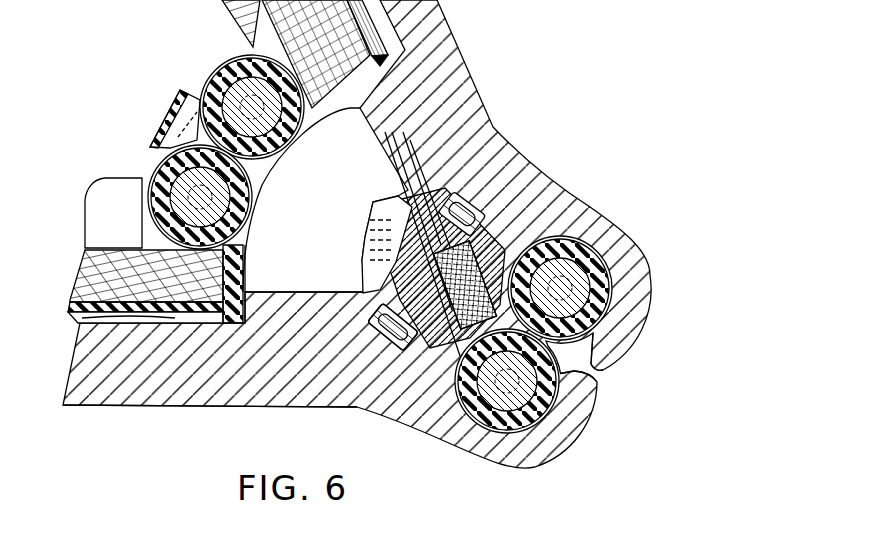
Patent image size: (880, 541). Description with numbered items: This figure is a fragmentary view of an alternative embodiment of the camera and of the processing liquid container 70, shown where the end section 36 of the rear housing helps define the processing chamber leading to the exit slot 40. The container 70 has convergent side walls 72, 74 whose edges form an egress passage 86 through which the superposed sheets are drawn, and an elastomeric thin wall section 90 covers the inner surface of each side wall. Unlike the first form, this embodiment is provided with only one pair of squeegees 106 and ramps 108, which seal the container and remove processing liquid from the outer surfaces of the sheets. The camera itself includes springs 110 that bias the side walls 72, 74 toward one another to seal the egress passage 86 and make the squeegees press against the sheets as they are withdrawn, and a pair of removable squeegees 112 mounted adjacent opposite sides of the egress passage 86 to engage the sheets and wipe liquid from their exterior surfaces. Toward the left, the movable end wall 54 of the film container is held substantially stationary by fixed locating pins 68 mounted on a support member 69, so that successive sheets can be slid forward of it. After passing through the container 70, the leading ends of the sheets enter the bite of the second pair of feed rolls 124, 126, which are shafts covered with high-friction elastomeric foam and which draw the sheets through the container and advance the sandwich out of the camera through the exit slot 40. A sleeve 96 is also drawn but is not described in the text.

The end section 36 is at (232, 388).
The exit slot 40 is at (592, 370).
The movable end wall 54 is at (247, 300).
The locating pins 68 is at (233, 249).
The support member 69 is at (257, 173).
The container 70 is at (452, 88).
The side wall 72 is at (493, 220).
The side wall 74 is at (427, 343).
The egress passage 86 is at (482, 326).
The thin wall section 90 is at (373, 228).
The sleeve 96 is at (445, 147).
The squeegees 106 is at (323, 347).
The ramps 108 is at (440, 165).
The springs 110 is at (445, 190).
The squeegees 112 is at (525, 225).
The feed roll 124 is at (493, 436).
The feed roll 126 is at (621, 274).